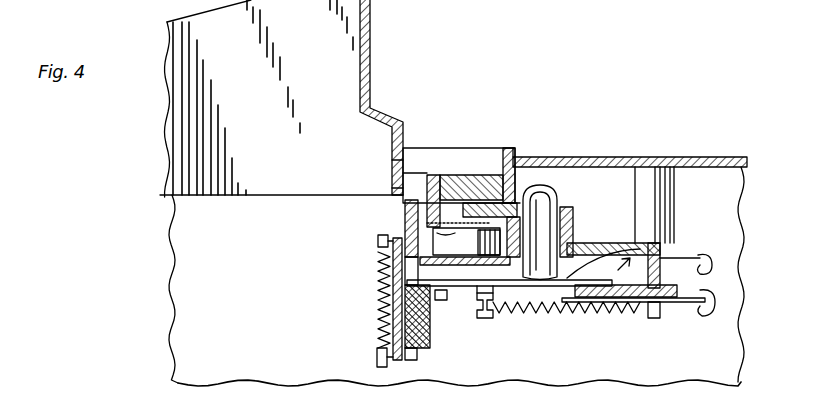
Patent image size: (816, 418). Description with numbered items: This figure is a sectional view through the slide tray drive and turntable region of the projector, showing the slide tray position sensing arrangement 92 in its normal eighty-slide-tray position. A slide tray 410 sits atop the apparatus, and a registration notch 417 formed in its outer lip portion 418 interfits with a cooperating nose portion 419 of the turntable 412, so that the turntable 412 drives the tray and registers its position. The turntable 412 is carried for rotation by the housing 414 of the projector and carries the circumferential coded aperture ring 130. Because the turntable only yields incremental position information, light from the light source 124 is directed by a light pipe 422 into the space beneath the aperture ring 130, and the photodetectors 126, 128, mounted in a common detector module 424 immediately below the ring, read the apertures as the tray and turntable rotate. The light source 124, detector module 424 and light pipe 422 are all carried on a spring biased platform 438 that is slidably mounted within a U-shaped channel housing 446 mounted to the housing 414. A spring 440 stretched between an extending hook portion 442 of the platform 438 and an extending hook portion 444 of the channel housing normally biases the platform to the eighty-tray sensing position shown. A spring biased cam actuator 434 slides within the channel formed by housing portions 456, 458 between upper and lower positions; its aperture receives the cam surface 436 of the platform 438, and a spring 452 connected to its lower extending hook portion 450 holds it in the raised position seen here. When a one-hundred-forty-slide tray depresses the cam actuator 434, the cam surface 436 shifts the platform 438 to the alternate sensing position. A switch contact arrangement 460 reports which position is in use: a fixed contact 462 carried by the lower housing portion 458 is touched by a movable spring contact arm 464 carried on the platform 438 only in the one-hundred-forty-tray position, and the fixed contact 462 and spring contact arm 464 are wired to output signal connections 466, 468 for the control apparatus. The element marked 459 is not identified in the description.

The slide tray 410 is at (388, 120).
The turntable 412 is at (433, 172).
The circumferential coded aperture ring 130 is at (462, 186).
The light pipe 422 is at (533, 178).
The slide tray position sensing arrangement 92 is at (540, 162).
The housing 414 is at (633, 155).
The U-shaped channel housing 446 is at (690, 245).
The detector module 424 is at (405, 225).
The photodetector 126 is at (476, 266).
The photodetector 128 is at (489, 242).
The spring biased platform 438 is at (583, 245).
The spring biased cam actuator 434 is at (386, 262).
The adjusting screw 459 is at (377, 239).
The spring 452 is at (380, 302).
The housing portion 456 is at (398, 360).
The extending hook portion 450 is at (377, 358).
The lower housing portion 458 is at (430, 350).
The spring 440 is at (565, 316).
The extending hook portion 444 is at (527, 317).
The light source 124 is at (558, 192).
The movable spring contact arm 464 is at (582, 268).
The fixed contact 462 is at (600, 298).
The switch contact arrangement 460 is at (640, 303).
The extending hook portion 442 is at (656, 319).
The output signal connection 468 is at (705, 256).
The output signal connection 466 is at (714, 305).
The nose portion 419 is at (397, 160).
The registration notch 417 is at (400, 186).
The outer lip portion 418 is at (671, 4).
The cam surface 436 is at (581, 416).